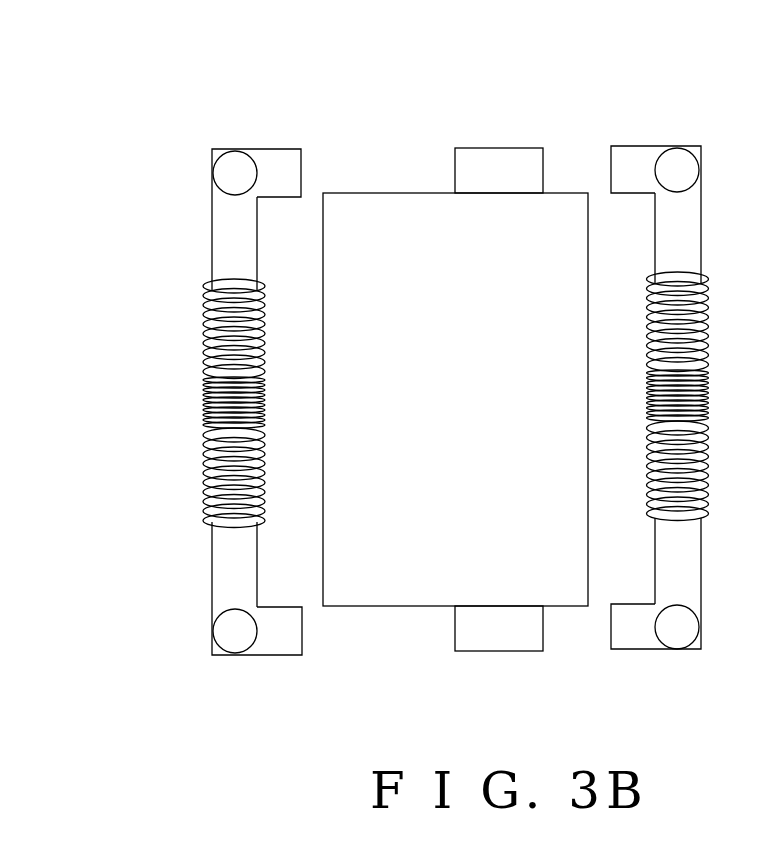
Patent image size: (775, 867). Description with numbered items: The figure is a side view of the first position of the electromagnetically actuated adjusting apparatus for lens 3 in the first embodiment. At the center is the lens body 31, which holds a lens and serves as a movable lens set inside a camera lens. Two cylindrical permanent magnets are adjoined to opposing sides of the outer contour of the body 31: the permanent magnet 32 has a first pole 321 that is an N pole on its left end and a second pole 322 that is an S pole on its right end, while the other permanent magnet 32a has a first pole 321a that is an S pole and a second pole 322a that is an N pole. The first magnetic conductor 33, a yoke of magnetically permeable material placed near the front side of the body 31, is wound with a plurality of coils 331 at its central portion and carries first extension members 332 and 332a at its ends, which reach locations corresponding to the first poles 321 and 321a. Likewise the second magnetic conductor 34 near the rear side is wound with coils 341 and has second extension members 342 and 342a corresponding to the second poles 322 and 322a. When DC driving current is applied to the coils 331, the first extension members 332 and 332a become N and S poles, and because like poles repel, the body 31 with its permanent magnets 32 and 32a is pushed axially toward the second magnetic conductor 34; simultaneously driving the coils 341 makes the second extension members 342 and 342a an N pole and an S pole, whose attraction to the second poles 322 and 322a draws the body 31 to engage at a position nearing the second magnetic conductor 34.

The electromagnetically actuated adjusting apparatus for lens 3 is at (185, 118).
The lens body 31 is at (383, 594).
The permanent magnet 32 is at (500, 146).
The first pole 321 is at (455, 168).
The second pole 322 is at (545, 180).
The permanent magnet 32a is at (500, 657).
The first pole 321a is at (455, 636).
The second pole 322a is at (545, 612).
The first magnetic conductor 33 is at (212, 226).
The coils 331 is at (204, 448).
The first extension member 332 is at (283, 154).
The first extension member 332a is at (282, 647).
The second magnetic conductor 34 is at (696, 229).
The coils 341 is at (709, 378).
The second extension member 342 is at (633, 152).
The second extension member 342a is at (633, 645).